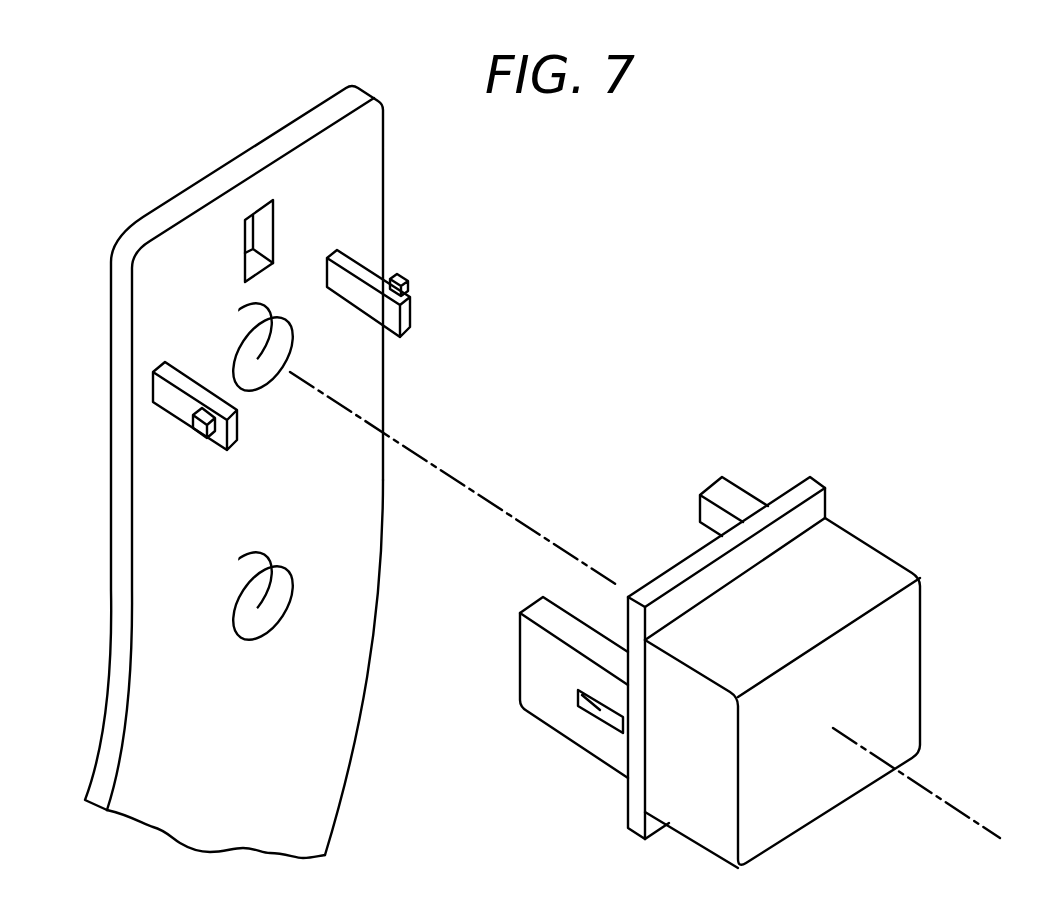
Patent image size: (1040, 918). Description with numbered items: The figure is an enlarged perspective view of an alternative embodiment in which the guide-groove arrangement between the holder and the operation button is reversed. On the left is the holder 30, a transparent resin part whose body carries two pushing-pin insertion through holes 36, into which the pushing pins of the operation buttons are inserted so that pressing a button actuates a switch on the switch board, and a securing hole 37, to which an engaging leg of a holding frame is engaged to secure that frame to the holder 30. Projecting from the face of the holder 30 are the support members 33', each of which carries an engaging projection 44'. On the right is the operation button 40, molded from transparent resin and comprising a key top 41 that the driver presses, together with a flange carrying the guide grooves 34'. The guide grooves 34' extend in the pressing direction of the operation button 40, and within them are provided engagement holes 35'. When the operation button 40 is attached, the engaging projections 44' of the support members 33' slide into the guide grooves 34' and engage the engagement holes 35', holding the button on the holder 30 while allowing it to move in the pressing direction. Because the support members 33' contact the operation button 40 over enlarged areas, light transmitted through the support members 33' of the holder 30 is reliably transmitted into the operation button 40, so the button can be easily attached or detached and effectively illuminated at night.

The holder 30 is at (162, 205).
The support members 33' is at (255, 317).
The guide grooves 34' is at (720, 452).
The engagement holes 35' is at (579, 758).
The pushing-pin insertion through holes 36 is at (247, 340).
The securing holes 37 is at (251, 222).
The operation button 40 is at (766, 618).
The key top 41 is at (905, 677).
The engaging projections 44' is at (255, 382).